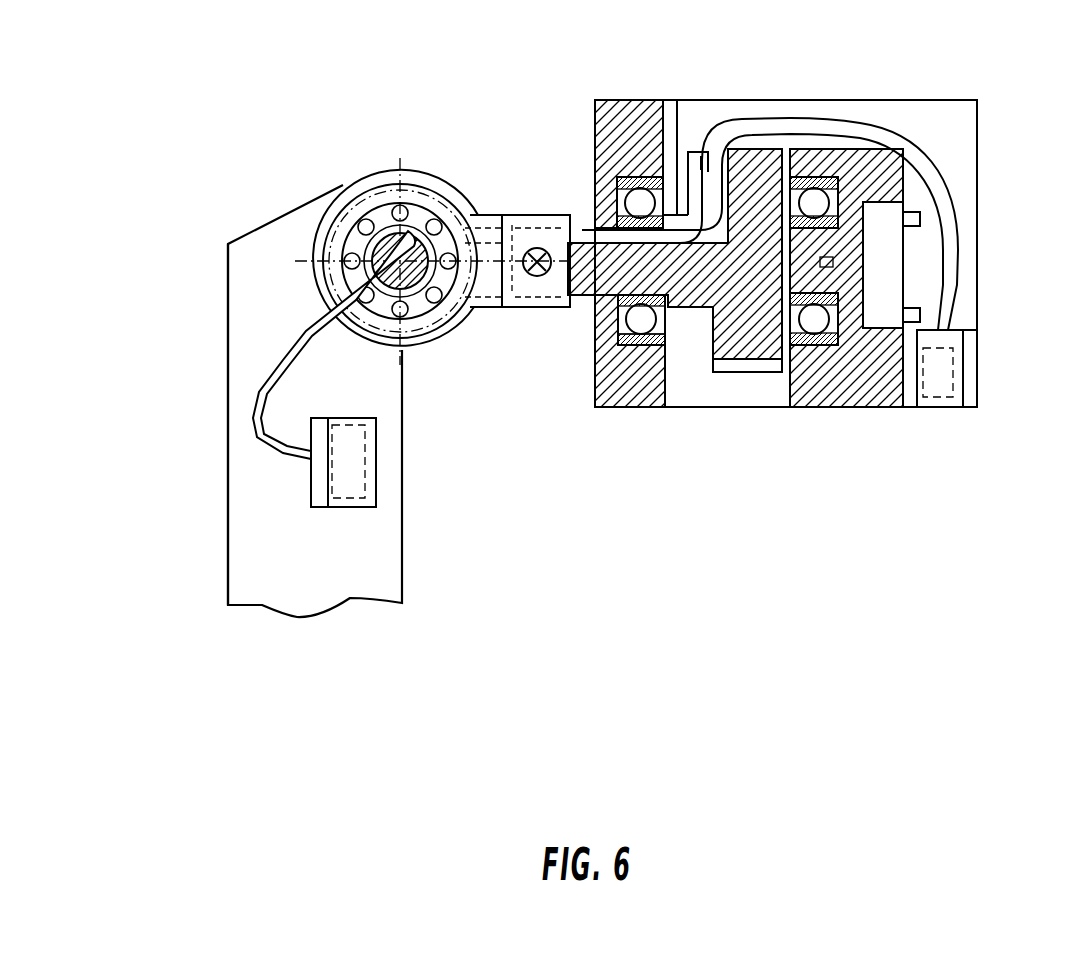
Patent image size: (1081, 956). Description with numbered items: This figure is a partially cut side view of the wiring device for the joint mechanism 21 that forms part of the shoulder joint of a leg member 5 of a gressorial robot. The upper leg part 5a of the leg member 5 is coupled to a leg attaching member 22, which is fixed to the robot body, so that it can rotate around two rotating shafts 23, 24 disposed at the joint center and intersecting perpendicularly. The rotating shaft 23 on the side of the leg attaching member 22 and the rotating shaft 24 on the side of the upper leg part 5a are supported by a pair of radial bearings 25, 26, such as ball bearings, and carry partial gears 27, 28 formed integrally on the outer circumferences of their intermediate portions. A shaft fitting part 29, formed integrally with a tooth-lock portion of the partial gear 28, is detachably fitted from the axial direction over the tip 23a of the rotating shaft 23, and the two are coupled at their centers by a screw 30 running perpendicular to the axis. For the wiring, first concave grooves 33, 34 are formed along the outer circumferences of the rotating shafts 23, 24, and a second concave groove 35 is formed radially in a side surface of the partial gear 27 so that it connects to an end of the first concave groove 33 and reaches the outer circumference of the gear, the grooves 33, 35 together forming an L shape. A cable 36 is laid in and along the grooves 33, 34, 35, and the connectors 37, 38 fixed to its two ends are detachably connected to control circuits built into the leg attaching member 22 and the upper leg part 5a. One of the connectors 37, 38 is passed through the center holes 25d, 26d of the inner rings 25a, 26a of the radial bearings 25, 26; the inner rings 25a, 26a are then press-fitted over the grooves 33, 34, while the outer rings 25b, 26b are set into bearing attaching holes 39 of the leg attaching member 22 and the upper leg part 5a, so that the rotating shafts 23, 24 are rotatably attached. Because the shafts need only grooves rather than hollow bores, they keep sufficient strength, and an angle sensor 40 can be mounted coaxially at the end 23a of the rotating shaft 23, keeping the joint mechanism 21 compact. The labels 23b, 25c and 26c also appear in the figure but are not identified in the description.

The leg member 5 is at (222, 300).
The upper leg part 5a is at (235, 332).
The joint mechanism 21 is at (518, 128).
The leg attaching member 22 is at (976, 100).
The rotating shaft 23 is at (692, 349).
The tip of the rotating shaft 23a is at (541, 215).
The shaft support portion 23b is at (842, 243).
The rotating shaft 24 is at (410, 300).
The radial bearing 25 is at (686, 465).
The inner ring 25a is at (606, 335).
The outer ring 25b is at (687, 309).
The retainer 25c is at (640, 323).
The center hole 25d is at (590, 303).
The radial bearing 26 is at (240, 288).
The inner ring 26a is at (348, 203).
The outer ring 26b is at (345, 252).
The cable strand 26c is at (345, 215).
The center hole 26d is at (297, 190).
The partial gear 27 is at (758, 362).
The partial gear 28 is at (421, 261).
The shaft fitting part 29 is at (487, 216).
The screw 30 is at (536, 278).
The first concave groove 33 is at (678, 112).
The first concave groove 34 is at (462, 310).
The second concave groove 35 is at (700, 150).
The cable 36 is at (590, 243).
The connector 37 is at (950, 337).
The connector 38 is at (317, 459).
The bearing attaching hole 39 is at (636, 186).
The angle sensor 40 is at (883, 263).